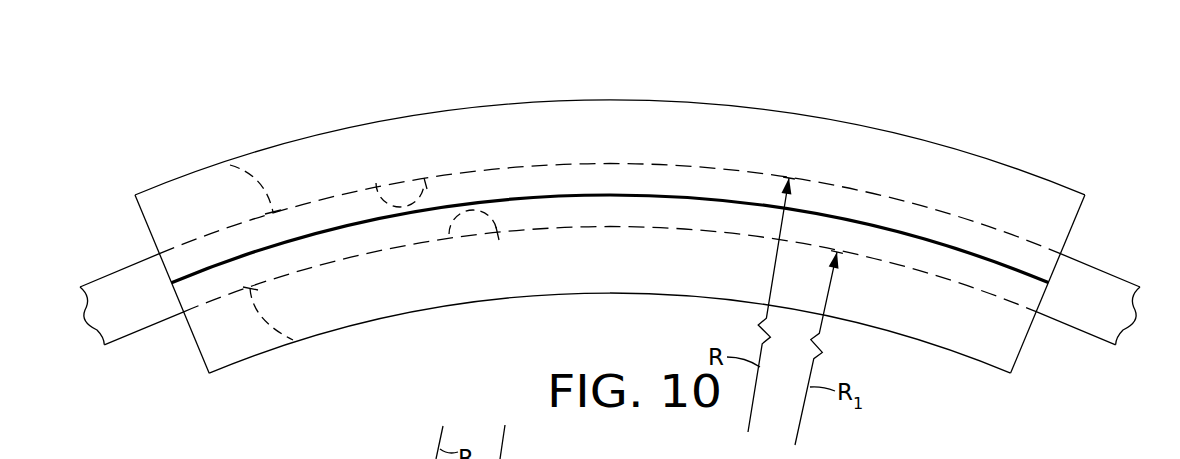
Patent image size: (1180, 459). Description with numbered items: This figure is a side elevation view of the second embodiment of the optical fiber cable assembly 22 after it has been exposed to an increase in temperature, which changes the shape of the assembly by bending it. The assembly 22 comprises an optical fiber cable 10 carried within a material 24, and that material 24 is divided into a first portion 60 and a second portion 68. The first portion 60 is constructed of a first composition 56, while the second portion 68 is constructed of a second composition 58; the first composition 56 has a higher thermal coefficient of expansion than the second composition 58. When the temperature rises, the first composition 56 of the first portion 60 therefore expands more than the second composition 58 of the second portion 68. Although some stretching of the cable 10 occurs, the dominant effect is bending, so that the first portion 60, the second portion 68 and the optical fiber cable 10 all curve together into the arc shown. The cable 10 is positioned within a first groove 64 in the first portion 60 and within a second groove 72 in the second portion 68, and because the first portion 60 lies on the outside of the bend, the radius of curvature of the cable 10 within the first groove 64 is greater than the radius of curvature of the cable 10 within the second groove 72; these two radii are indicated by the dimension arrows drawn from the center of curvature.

The optical fiber cable 10 is at (138, 288).
The optical fiber cable assembly 22 is at (457, 82).
The material 24 is at (643, 183).
The first composition 56 is at (537, 118).
The second composition 58 is at (378, 293).
The first portion 60 is at (803, 133).
The first groove 64 is at (376, 183).
The second portion 68 is at (910, 318).
The second groove 72 is at (498, 234).